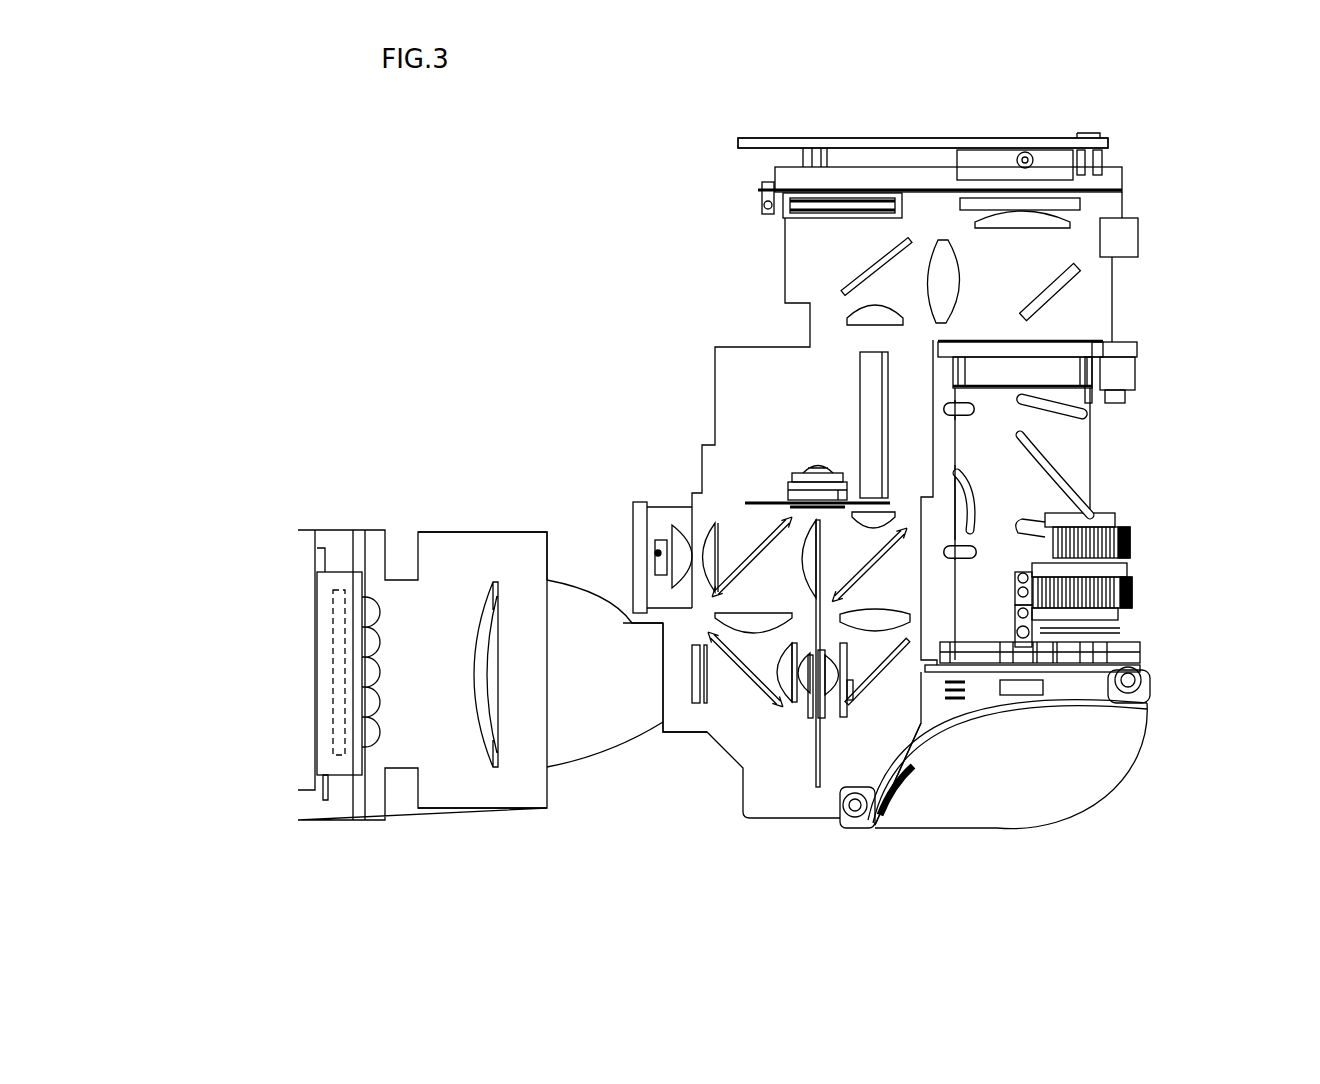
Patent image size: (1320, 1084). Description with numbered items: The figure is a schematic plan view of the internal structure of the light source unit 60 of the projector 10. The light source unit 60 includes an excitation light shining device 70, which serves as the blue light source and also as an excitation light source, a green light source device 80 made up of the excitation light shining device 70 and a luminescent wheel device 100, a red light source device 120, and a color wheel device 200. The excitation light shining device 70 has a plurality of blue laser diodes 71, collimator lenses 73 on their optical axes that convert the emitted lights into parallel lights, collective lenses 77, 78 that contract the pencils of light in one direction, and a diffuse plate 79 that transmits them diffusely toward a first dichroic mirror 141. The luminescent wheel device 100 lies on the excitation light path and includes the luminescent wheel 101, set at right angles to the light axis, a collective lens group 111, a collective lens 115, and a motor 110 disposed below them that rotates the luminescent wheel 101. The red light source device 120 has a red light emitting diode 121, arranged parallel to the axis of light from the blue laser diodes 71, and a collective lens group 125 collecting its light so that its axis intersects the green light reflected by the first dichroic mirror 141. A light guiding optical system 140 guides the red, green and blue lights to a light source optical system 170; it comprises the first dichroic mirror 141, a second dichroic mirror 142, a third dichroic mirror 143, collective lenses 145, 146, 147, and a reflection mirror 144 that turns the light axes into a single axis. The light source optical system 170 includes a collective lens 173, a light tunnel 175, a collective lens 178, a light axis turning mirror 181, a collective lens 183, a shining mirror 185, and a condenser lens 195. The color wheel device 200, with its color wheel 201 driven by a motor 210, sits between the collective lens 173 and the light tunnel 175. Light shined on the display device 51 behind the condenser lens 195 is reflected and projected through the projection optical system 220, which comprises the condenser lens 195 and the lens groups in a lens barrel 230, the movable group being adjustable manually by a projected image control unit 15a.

The projector 10 is at (1172, 172).
The projected image control unit 15a is at (1140, 572).
The display device 51 is at (1130, 215).
The light source unit 60 is at (528, 840).
The excitation light shining device 70 is at (480, 607).
The blue laser diodes 71 is at (332, 673).
The collimator lenses 73 is at (367, 610).
The collective lens 77 is at (477, 740).
The collective lens 78 is at (693, 700).
The diffuse plate 79 is at (703, 700).
The green light source device 80 is at (377, 580).
The luminescent wheel device 100 is at (827, 703).
The luminescent wheel 101 is at (835, 725).
The motor 110 is at (855, 690).
The collective lens group 111 is at (800, 717).
The collective lens 115 is at (880, 745).
The red light source device 120 is at (613, 502).
The red light emitting diode 121 is at (658, 553).
The collective lens group 125 is at (667, 527).
The light guiding optical system 140 is at (683, 707).
The first dichroic mirror 141 is at (758, 632).
The second dichroic mirror 142 is at (770, 545).
The third dichroic mirror 143 is at (1028, 582).
The reflection mirror 144 is at (877, 677).
The collective lens 145 is at (744, 632).
The collective lens 146 is at (1028, 625).
The collective lens 147 is at (1017, 667).
The light source optical system 170 is at (860, 240).
The collective lens 173 is at (890, 514).
The light tunnel 175 is at (860, 385).
The collective lens 178 is at (847, 322).
The light axis turning mirror 181 is at (870, 266).
The collective lens 183 is at (935, 262).
The shining mirror 185 is at (1050, 287).
The condenser lens 195 is at (1022, 213).
The color wheel device 200 is at (785, 455).
The color wheel 201 is at (765, 502).
The motor 210 is at (815, 490).
The projection optical system 220 is at (1063, 462).
The lens barrel 230 is at (1060, 440).